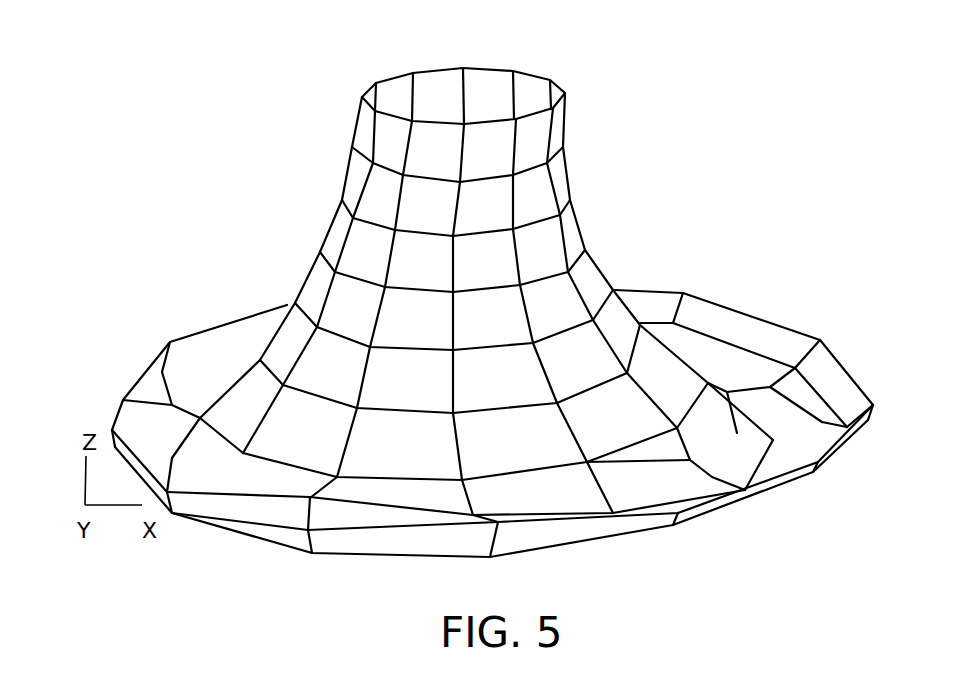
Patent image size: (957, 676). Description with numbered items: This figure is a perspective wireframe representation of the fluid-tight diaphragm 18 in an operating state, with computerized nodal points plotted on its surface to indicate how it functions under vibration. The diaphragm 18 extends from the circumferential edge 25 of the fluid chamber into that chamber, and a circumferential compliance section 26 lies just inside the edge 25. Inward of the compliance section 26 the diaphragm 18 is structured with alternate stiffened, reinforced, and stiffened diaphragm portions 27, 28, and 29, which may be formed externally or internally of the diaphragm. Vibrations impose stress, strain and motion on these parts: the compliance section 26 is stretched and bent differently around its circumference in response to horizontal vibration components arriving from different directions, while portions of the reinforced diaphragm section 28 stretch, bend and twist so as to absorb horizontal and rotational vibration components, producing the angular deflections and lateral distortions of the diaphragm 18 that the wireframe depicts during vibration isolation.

The fluid-tight diaphragm 18 is at (492, 326).
The circumferential edge 25 is at (763, 322).
The circumferential compliance section 26 is at (333, 557).
The stiffened diaphragm portion 27 is at (358, 97).
The reinforced diaphragm portion 28 is at (318, 218).
The stiffened diaphragm portion 29 is at (200, 418).